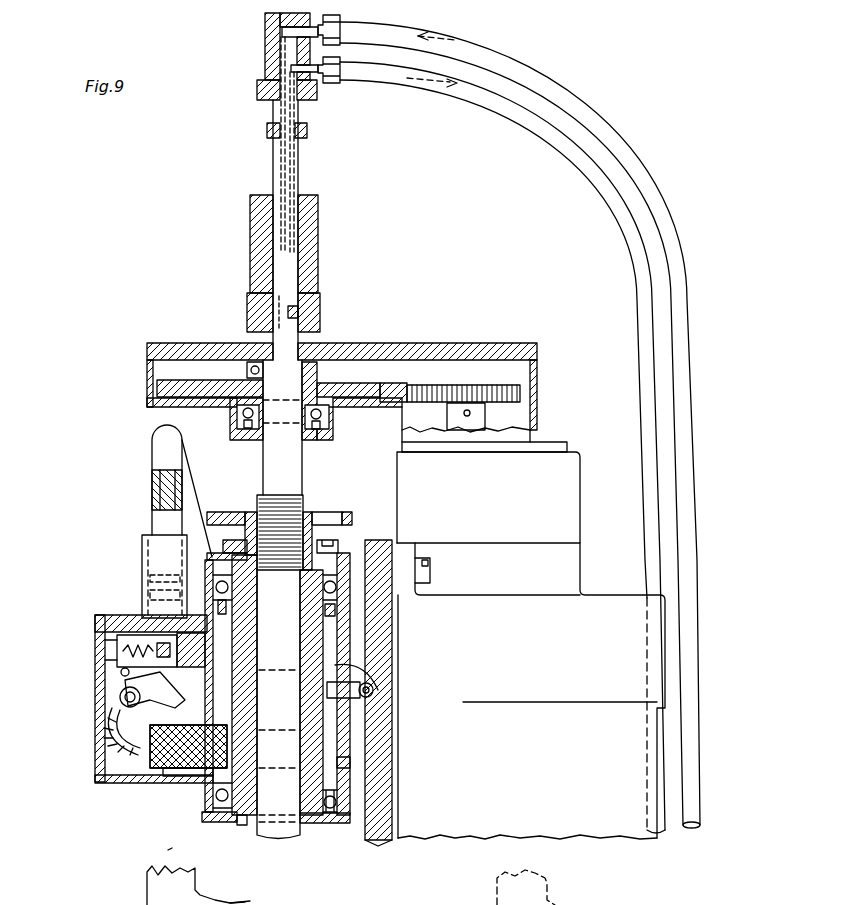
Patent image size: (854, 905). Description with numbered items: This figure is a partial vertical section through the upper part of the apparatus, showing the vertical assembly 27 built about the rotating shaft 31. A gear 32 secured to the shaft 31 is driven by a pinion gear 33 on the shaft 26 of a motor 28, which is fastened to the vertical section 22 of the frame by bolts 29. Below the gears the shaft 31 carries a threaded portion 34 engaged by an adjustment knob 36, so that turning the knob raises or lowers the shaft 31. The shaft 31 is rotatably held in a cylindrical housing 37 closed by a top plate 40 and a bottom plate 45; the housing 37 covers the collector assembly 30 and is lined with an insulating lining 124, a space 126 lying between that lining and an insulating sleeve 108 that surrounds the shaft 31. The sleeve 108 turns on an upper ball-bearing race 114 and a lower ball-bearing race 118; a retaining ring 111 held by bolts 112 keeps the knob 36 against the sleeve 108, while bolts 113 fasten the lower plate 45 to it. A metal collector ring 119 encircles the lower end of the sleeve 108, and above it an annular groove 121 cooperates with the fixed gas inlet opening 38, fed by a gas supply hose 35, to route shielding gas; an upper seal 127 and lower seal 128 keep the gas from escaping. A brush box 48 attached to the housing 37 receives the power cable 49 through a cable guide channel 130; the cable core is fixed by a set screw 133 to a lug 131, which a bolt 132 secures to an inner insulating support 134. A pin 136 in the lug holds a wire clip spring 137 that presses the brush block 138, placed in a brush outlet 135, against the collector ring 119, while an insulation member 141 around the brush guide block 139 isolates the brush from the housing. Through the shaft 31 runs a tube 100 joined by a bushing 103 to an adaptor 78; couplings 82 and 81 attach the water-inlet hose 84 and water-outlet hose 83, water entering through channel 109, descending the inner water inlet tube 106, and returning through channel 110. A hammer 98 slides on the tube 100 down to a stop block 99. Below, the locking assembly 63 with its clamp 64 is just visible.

In FIG. 9, the vertical section 22 is at (380, 557).
In FIG. 9, the shaft 26 is at (468, 430).
In FIG. 9, the vertical assembly 27 is at (240, 500).
In FIG. 9, the motor 28 is at (545, 661).
In FIG. 9, the bolts 29 is at (432, 571).
In FIG. 9, the collector assembly 30 is at (185, 803).
In FIG. 9, the rotating shaft 31 is at (293, 457).
In FIG. 9, the gear 32 is at (213, 382).
In FIG. 9, the pinion gear 33 is at (478, 386).
In FIG. 9, the threaded portion 34 is at (303, 505).
In FIG. 9, the gas supply hose 35 is at (380, 688).
In FIG. 9, the adjustment knob 36 is at (352, 516).
In FIG. 9, the cylindrical housing 37 is at (347, 805).
In FIG. 9, the gas inlet opening 38 is at (463, 702).
In FIG. 9, the top plate 40 is at (212, 553).
In FIG. 9, the bottom plate 45 is at (345, 820).
In FIG. 9, the brush box 48 is at (85, 797).
In FIG. 9, the power cable 49 is at (152, 499).
In FIG. 10, the locking assembly 63 is at (140, 881).
In FIG. 10, the clamp 64 is at (255, 897).
In FIG. 9, the adaptor 78 is at (290, 31).
In FIG. 9, the coupling 81 is at (333, 80).
In FIG. 9, the coupling 82 is at (340, 42).
In FIG. 9, the water-outlet hose 83 is at (647, 547).
In FIG. 9, the water-inlet hose 84 is at (701, 550).
In FIG. 9, the hammer 98 is at (318, 260).
In FIG. 9, the stop block 99 is at (320, 298).
In FIG. 9, the tube 100 is at (273, 163).
In FIG. 9, the bushing 103 is at (307, 130).
In FIG. 9, the water inlet tube 106 is at (288, 172).
In FIG. 9, the insulating sleeve 108 is at (253, 587).
In FIG. 9, the channel 109 is at (292, 34).
In FIG. 9, the channel 110 is at (317, 97).
In FIG. 9, the retaining ring 111 is at (228, 547).
In FIG. 9, the bolts 112 is at (332, 542).
In FIG. 9, the bolts 113 is at (242, 825).
In FIG. 9, the upper ball-bearing race 114 is at (343, 583).
In FIG. 9, the lower ball-bearing race 118 is at (332, 822).
In FIG. 9, the metal collector ring 119 is at (253, 742).
In FIG. 9, the annular groove 121 is at (353, 663).
In FIG. 9, the insulating lining 124 is at (337, 772).
In FIG. 9, the space 126 is at (348, 642).
In FIG. 9, the upper seal 127 is at (337, 610).
In FIG. 9, the lower seal 128 is at (207, 822).
In FIG. 9, the cable guide channel 130 is at (143, 566).
In FIG. 9, the lug 131 is at (122, 692).
In FIG. 9, the bolt 132 is at (118, 672).
In FIG. 9, the set screw 133 is at (115, 648).
In FIG. 9, the inner insulating support 134 is at (145, 635).
In FIG. 9, the brush outlet 135 is at (250, 714).
In FIG. 9, the pin 136 is at (120, 700).
In FIG. 9, the wire clip spring 137 is at (118, 740).
In FIG. 9, the brush block 138 is at (135, 786).
In FIG. 9, the brush guide block 139 is at (151, 860).
In FIG. 9, the insulation member 141 is at (150, 735).